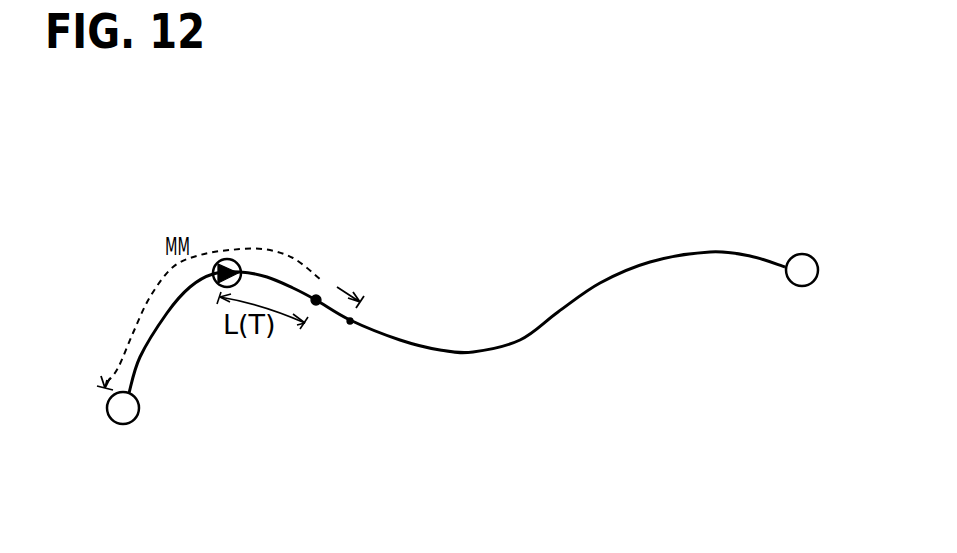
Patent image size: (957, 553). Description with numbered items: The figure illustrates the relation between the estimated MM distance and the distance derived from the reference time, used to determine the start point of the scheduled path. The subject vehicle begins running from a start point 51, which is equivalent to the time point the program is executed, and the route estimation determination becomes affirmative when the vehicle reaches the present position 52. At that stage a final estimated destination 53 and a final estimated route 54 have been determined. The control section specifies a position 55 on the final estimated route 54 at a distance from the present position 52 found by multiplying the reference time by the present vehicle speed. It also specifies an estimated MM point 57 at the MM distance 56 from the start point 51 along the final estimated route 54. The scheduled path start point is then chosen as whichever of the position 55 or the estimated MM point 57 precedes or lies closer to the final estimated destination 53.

The start point 51 is at (140, 408).
The present position 52 is at (228, 258).
The final estimated destination 53 is at (800, 254).
The final estimated route 54 is at (558, 312).
The position at distance L(T) 55 is at (319, 292).
The MM distance 56 is at (143, 307).
The estimated MM point 57 is at (349, 323).